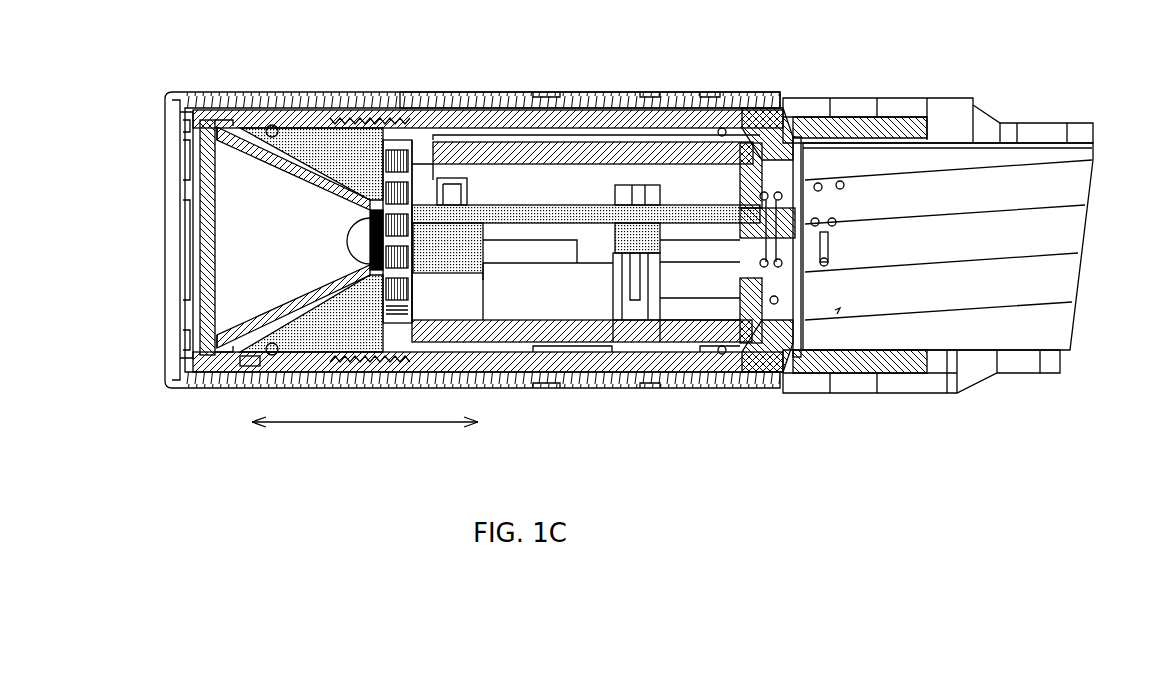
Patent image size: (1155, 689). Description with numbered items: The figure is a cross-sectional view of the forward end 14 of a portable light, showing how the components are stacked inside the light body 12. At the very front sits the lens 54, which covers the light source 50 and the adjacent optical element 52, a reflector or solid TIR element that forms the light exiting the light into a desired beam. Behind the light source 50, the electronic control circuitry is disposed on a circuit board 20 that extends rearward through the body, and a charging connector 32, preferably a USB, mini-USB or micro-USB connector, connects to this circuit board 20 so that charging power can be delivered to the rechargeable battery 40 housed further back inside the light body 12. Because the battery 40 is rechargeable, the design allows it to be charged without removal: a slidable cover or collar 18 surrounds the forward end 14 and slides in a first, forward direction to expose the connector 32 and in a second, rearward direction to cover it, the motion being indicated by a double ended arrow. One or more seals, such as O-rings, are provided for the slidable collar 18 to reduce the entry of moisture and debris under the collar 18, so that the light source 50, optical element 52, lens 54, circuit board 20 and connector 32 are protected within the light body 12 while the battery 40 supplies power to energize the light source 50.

The light body 12 is at (976, 94).
The forward end 14 is at (155, 110).
The slidable collar 18 is at (645, 98).
The circuit board 20 is at (563, 196).
The connector 32 is at (636, 330).
The rechargeable battery 40 is at (1068, 232).
The light source 50 is at (355, 243).
The optical element 52 is at (268, 165).
The lens 54 is at (212, 200).